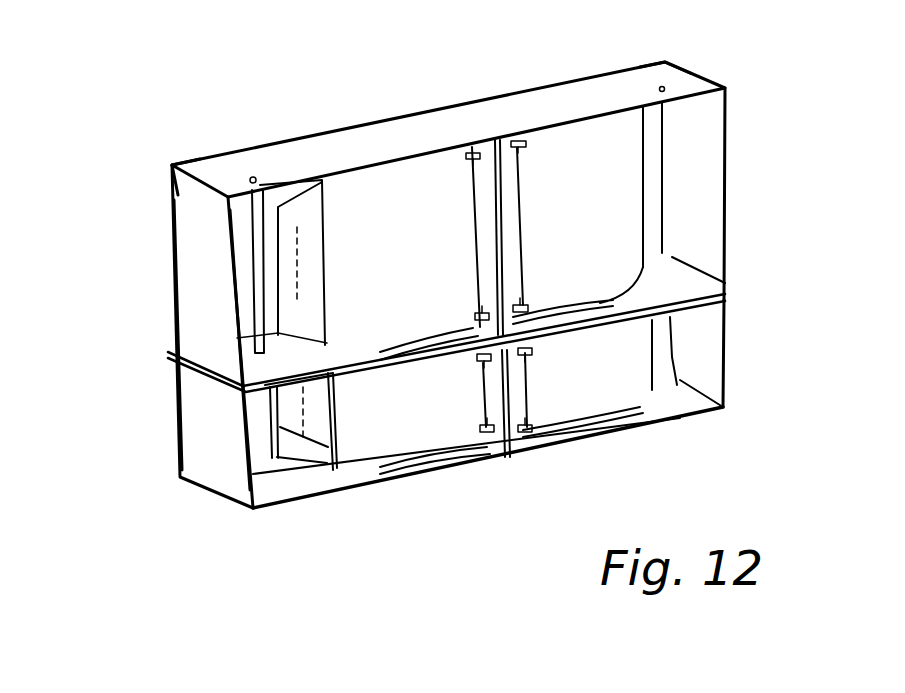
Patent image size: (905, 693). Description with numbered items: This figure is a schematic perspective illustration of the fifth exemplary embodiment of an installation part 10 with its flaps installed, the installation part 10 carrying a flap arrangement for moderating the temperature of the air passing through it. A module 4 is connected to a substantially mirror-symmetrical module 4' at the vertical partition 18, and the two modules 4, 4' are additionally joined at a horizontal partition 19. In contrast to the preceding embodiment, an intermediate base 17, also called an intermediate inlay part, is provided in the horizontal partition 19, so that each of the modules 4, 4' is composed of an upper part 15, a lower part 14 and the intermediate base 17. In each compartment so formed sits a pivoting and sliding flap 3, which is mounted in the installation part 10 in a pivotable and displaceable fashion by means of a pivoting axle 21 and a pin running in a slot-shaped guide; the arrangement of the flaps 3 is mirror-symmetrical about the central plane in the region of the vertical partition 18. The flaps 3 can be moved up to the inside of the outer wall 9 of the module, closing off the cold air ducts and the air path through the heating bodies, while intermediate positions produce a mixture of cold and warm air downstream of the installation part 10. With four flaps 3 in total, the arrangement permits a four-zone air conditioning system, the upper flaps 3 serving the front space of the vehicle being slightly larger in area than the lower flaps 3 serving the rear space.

The installation part 10 is at (362, 90).
The module 4 is at (150, 153).
The mirror-symmetrical module 4' is at (693, 40).
The outer wall 9 is at (187, 223).
The pivoting axle 21 is at (257, 223).
The vertical partition 18 is at (490, 142).
The pivoting and sliding flap 3 is at (568, 155).
The upper part 15 is at (715, 147).
The lower part 14 is at (715, 353).
The horizontal partition 19 is at (198, 373).
The intermediate base 17 is at (232, 388).